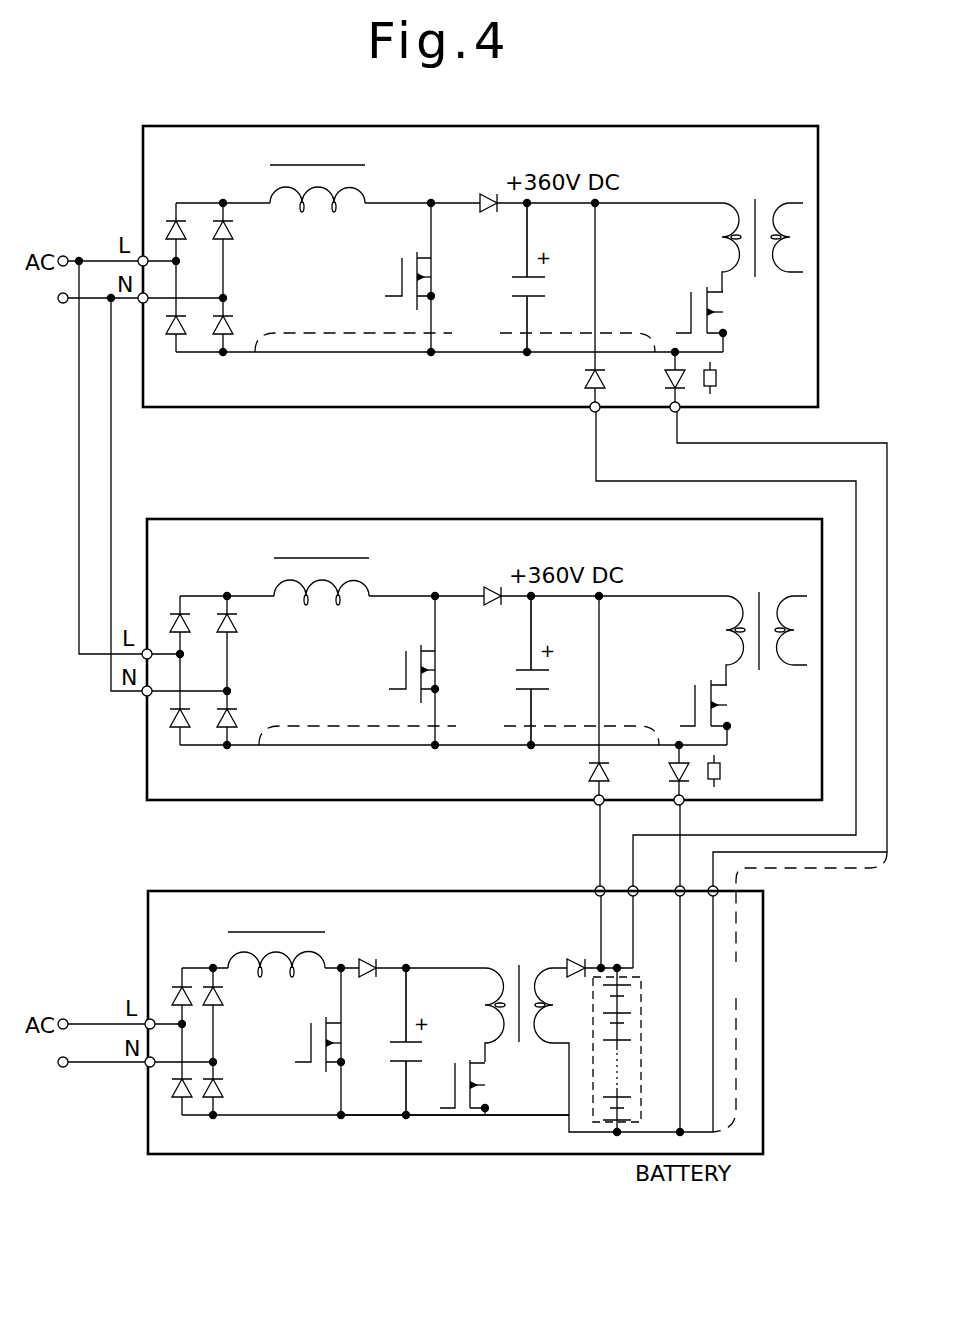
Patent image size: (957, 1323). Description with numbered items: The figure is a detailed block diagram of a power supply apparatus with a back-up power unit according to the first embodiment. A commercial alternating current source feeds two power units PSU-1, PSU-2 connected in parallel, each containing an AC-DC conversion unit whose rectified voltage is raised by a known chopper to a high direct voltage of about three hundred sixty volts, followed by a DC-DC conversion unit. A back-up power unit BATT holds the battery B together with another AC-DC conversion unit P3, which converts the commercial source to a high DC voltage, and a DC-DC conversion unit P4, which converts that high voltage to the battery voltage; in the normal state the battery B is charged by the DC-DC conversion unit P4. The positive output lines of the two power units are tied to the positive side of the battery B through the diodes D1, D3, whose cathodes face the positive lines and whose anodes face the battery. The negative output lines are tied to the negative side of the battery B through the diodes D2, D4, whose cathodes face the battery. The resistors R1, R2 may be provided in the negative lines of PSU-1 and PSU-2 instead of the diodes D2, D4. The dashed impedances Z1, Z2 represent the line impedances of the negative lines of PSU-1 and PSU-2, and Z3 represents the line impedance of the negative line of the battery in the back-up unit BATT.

The power unit PSU-1 is at (480, 266).
The power unit PSU-2 is at (484, 659).
The back-up power unit BATT is at (455, 1022).
The AC-DC conversion unit P3 is at (362, 1027).
The DC-DC conversion unit P4 is at (455, 1025).
The line impedance Z1 is at (455, 336).
The line impedance Z2 is at (459, 729).
The line impedance Z3 is at (800, 992).
The diode D1 is at (580, 306).
The diode D2 is at (657, 381).
The diode D3 is at (584, 699).
The diode D4 is at (661, 774).
The resistor R1 is at (723, 380).
The resistor R2 is at (727, 773).
The battery B is at (643, 1003).